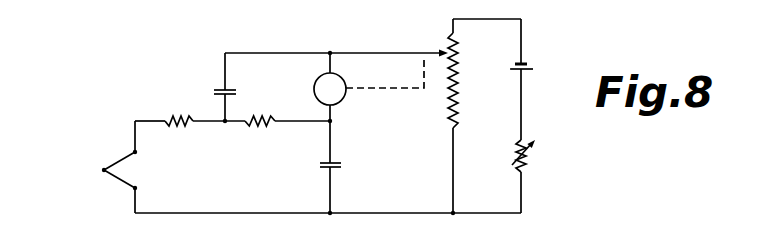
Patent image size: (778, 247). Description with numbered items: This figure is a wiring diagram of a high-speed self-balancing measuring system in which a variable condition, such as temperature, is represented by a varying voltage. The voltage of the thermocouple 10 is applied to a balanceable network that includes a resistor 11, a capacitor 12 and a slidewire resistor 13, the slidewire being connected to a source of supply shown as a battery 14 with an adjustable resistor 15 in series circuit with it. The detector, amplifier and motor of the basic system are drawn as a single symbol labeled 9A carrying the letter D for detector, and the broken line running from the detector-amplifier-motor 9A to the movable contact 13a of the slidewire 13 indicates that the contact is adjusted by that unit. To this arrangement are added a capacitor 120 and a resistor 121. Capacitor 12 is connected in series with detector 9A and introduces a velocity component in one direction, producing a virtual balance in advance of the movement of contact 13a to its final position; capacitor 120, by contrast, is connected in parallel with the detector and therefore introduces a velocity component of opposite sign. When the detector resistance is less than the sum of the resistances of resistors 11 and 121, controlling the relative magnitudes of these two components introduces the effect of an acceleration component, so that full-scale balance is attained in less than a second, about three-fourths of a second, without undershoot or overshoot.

The thermocouple 10 is at (104, 170).
The resistor 11 is at (187, 128).
The capacitor 120 is at (215, 93).
The resistor 121 is at (258, 130).
The detector-amplifier-motor 9A is at (343, 100).
The capacitor 12 is at (343, 165).
The movable contact 13a is at (440, 52).
The slidewire resistor 13 is at (458, 103).
The battery 14 is at (533, 63).
The adjustable resistor 15 is at (527, 164).